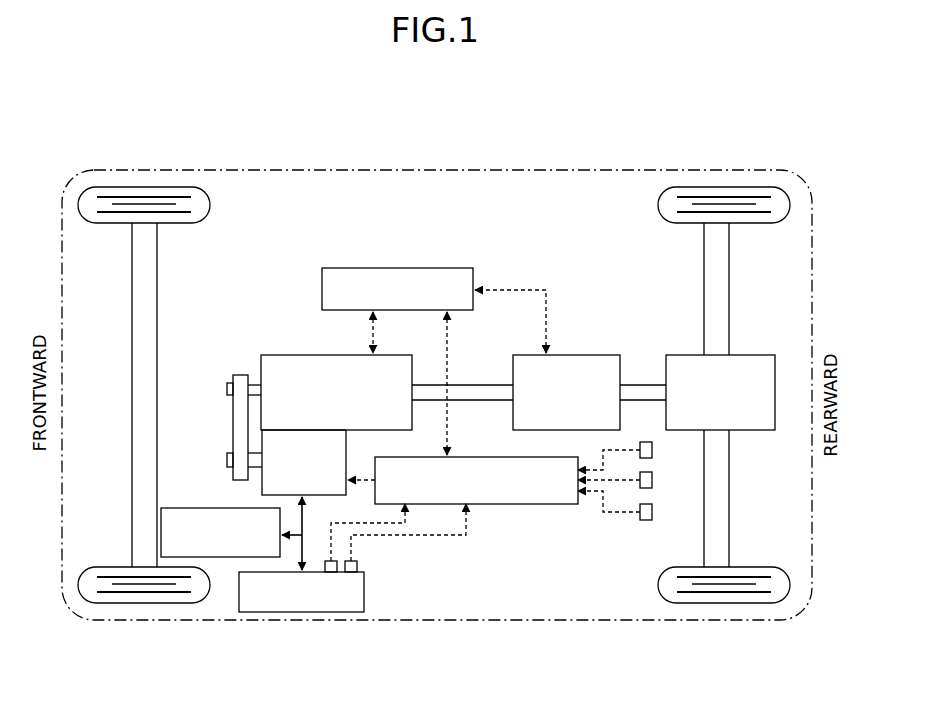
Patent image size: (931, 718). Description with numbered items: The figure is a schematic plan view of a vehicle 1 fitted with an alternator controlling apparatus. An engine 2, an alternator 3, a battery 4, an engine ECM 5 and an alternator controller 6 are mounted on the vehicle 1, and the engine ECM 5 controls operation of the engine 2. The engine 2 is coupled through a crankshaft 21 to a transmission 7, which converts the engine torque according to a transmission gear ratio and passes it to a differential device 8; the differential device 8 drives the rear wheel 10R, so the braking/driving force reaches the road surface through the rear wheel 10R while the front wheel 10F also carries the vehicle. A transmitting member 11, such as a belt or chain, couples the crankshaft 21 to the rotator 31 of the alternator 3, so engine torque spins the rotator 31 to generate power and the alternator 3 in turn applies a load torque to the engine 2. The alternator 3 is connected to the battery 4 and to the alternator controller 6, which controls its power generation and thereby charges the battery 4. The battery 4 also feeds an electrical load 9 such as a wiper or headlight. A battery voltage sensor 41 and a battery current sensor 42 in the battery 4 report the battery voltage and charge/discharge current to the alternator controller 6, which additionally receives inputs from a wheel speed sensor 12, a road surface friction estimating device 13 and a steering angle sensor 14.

The vehicle 1 is at (420, 211).
The front wheel 10F is at (145, 187).
The rear wheel 10R is at (724, 187).
The engine 2 is at (303, 355).
The alternator 3 is at (346, 452).
The battery 4 is at (364, 595).
The engine ECM 5 is at (443, 268).
The alternator controller 6 is at (532, 457).
The transmission 7 is at (586, 355).
The differential device 8 is at (742, 355).
The electrical load 9 is at (216, 508).
The transmitting member 11 is at (233, 428).
The wheel speed sensor 12 is at (652, 450).
The road surface friction estimating device 13 is at (652, 480).
The steering angle sensor 14 is at (652, 512).
The crankshaft 21 is at (227, 389).
The rotator 31 is at (227, 460).
The battery voltage sensor 41 is at (357, 561).
The battery current sensor 42 is at (325, 561).